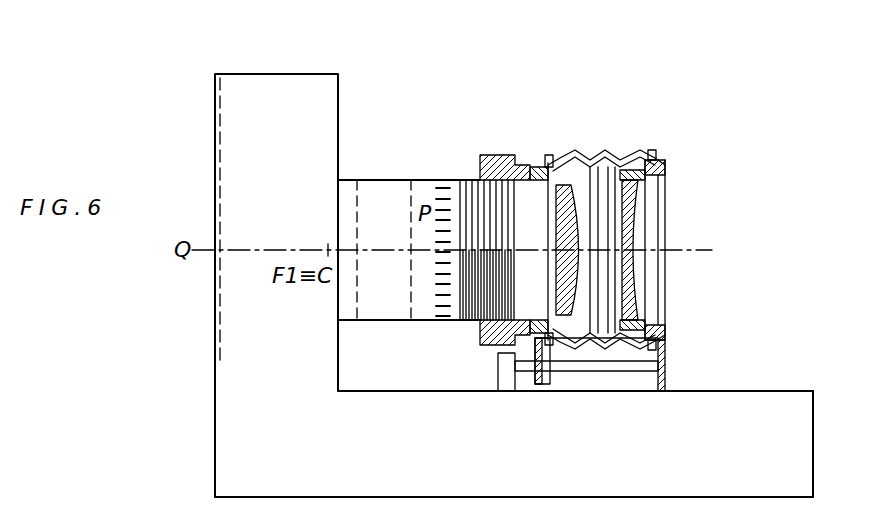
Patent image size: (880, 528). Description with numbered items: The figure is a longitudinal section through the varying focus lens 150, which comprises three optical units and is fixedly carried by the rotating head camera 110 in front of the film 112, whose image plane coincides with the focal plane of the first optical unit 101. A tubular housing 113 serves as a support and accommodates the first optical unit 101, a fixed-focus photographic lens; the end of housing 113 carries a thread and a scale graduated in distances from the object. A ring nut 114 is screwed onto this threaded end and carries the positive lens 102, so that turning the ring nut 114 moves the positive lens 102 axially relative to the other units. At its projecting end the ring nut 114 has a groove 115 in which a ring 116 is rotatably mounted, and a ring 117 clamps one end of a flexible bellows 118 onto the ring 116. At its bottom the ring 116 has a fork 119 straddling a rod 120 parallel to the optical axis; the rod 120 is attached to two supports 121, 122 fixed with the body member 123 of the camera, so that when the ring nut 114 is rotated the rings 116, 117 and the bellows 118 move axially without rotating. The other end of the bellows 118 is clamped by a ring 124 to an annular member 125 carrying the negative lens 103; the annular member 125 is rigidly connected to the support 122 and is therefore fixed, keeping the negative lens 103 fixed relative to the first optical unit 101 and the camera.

The film 112 is at (222, 104).
The tubular housing 113 is at (395, 164).
The first optical unit 101 is at (414, 190).
The ring nut 114 is at (497, 155).
The ring 116 is at (545, 158).
The ring 117 is at (548, 165).
The varying focus lens 150 is at (556, 150).
The groove 115 is at (574, 185).
The flexible bellows 118 is at (612, 158).
The positive lens 102 is at (630, 158).
The ring 124 is at (662, 160).
The annular member 125 is at (666, 180).
The negative lens 103 is at (637, 215).
The support 122 is at (666, 346).
The rotating head camera 110 is at (775, 388).
The body member 123 is at (818, 397).
The support 121 is at (500, 384).
The fork 119 is at (538, 384).
The rod 120 is at (614, 372).